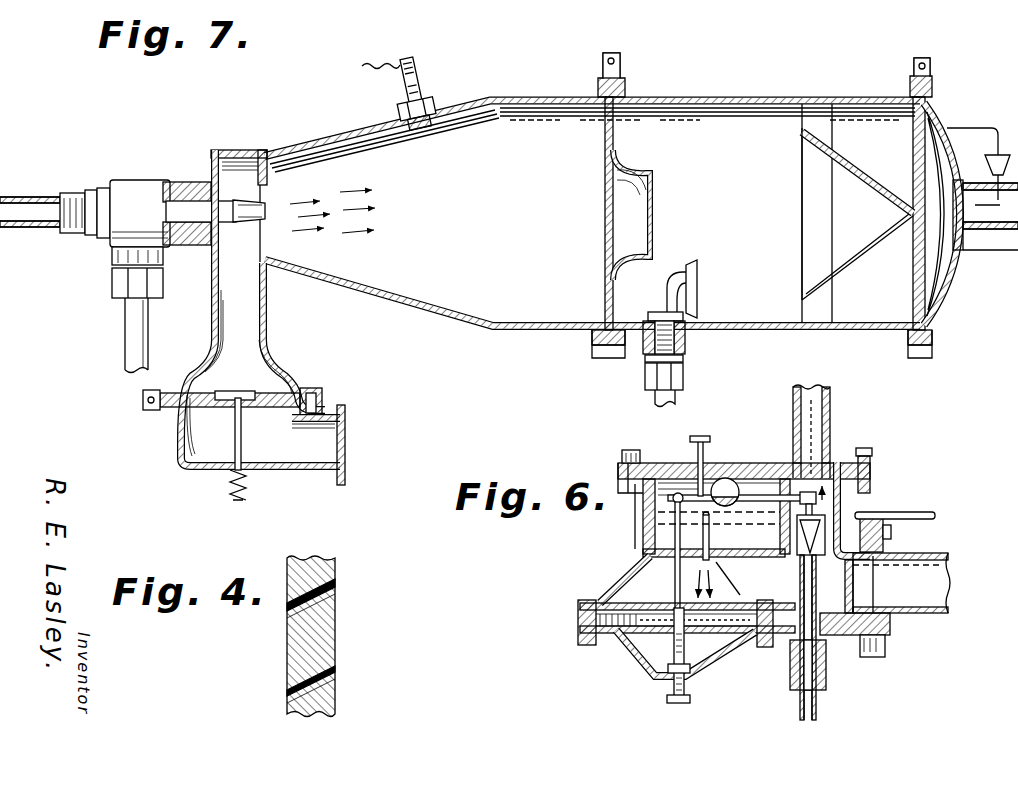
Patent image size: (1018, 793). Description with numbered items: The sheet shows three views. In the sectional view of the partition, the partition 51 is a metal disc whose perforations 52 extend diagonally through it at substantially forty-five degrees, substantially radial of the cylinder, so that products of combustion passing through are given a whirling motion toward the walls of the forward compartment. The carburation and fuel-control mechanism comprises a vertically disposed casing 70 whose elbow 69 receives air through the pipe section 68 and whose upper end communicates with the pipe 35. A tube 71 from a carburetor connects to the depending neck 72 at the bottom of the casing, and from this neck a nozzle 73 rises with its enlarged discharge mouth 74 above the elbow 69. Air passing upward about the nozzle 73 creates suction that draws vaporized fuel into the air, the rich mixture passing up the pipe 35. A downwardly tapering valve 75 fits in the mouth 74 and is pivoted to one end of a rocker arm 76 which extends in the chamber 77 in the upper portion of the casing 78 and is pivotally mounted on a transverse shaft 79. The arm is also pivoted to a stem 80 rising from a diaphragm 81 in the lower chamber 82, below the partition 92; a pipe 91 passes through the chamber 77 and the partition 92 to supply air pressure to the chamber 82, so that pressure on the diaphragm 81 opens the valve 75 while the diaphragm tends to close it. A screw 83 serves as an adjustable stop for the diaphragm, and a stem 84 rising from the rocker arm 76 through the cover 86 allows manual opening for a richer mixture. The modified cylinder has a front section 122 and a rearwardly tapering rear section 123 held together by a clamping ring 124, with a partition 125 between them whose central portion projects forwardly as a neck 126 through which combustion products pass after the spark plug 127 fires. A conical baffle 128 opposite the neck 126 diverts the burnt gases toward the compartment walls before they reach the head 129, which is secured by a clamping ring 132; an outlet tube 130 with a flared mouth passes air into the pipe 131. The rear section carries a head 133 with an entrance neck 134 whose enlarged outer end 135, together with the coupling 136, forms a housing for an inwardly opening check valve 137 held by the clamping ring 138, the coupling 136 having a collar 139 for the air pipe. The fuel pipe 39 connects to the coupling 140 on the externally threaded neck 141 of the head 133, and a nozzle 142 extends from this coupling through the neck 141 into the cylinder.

In FIG. 7, the pipe 39 is at (35, 205).
In FIG. 7, the coupling 140 is at (130, 180).
In FIG. 7, the externally threaded neck 141 is at (205, 185).
In FIG. 7, the head 133 is at (244, 150).
In FIG. 7, the nozzle 142 is at (255, 195).
In FIG. 7, the spark plug 127 is at (426, 83).
In FIG. 7, the rear section 123 is at (543, 107).
In FIG. 7, the clamping ring 124 is at (626, 79).
In FIG. 7, the front section 122 is at (733, 100).
In FIG. 7, the clamping ring 132 is at (932, 75).
In FIG. 7, the partition 125 is at (603, 140).
In FIG. 7, the neck 126 is at (652, 186).
In FIG. 7, the conical baffle 128 is at (835, 202).
In FIG. 7, the head 129 is at (940, 275).
In FIG. 7, the outlet tube 130 is at (667, 300).
In FIG. 7, the pipe 131 is at (688, 386).
In FIG. 7, the entrance neck 134 is at (268, 302).
In FIG. 7, the enlarged outer end portion 135 is at (290, 364).
In FIG. 7, the check valve 137 is at (260, 392).
In FIG. 7, the clamping ring 138 is at (325, 397).
In FIG. 7, the collar 139 is at (336, 478).
In FIG. 7, the coupling 136 is at (180, 427).
In FIG. 6, the cover 86 is at (637, 462).
In FIG. 6, the chamber 77 is at (665, 462).
In FIG. 6, the stem 84 is at (703, 440).
In FIG. 6, the shaft 79 is at (730, 478).
In FIG. 6, the rocker arm 76 is at (762, 494).
In FIG. 6, the pipe 35 is at (830, 410).
In FIG. 6, the casing 70 is at (866, 496).
In FIG. 6, the discharge mouth 74 is at (868, 516).
In FIG. 6, the pipe 91 is at (923, 511).
In FIG. 6, the pipe section 68 is at (935, 558).
In FIG. 6, the casing 78 is at (642, 518).
In FIG. 6, the stem 80 is at (672, 524).
In FIG. 6, the lower chamber 82 is at (624, 582).
In FIG. 6, the partition 92 is at (756, 549).
In FIG. 6, the valve 75 is at (795, 545).
In FIG. 6, the nozzle 73 is at (845, 586).
In FIG. 6, the diaphragm 81 is at (630, 651).
In FIG. 6, the neck 72 is at (790, 651).
In FIG. 6, the elbow 69 is at (846, 640).
In FIG. 6, the screw 83 is at (680, 704).
In FIG. 6, the tube 71 is at (818, 716).
In FIG. 4, the partition 51 is at (287, 651).
In FIG. 4, the perforations 52 is at (335, 660).